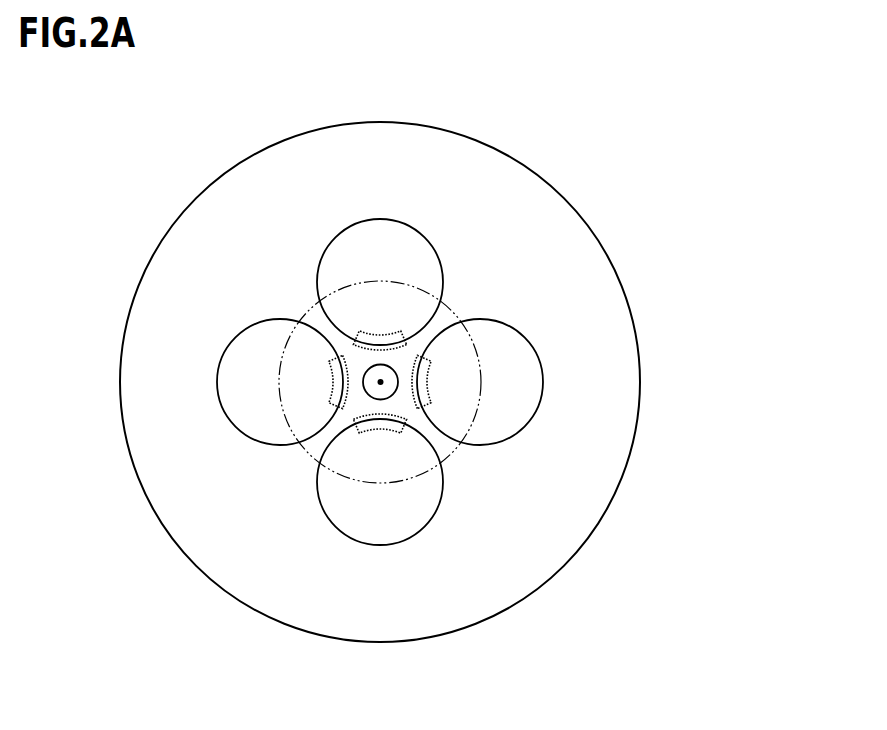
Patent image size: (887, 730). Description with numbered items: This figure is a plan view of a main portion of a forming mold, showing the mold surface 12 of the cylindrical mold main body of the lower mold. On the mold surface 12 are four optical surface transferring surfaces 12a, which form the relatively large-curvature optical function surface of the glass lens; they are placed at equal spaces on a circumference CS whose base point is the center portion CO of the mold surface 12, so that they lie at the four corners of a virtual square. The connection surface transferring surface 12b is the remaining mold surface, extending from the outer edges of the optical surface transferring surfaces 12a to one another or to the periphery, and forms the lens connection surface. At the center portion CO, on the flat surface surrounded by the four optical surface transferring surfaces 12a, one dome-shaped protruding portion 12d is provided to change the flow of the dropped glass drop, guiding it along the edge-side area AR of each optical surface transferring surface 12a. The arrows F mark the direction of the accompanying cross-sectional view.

The mold surface 12 is at (611, 249).
The optical surface transferring surface 12a is at (432, 495).
The connection surface transferring surface 12b is at (465, 615).
The protruding portion 12d is at (382, 380).
The circumference CS is at (357, 483).
The center portion CO is at (380, 382).
The area AR is at (355, 338).
The FF arrow F is at (72, 385).